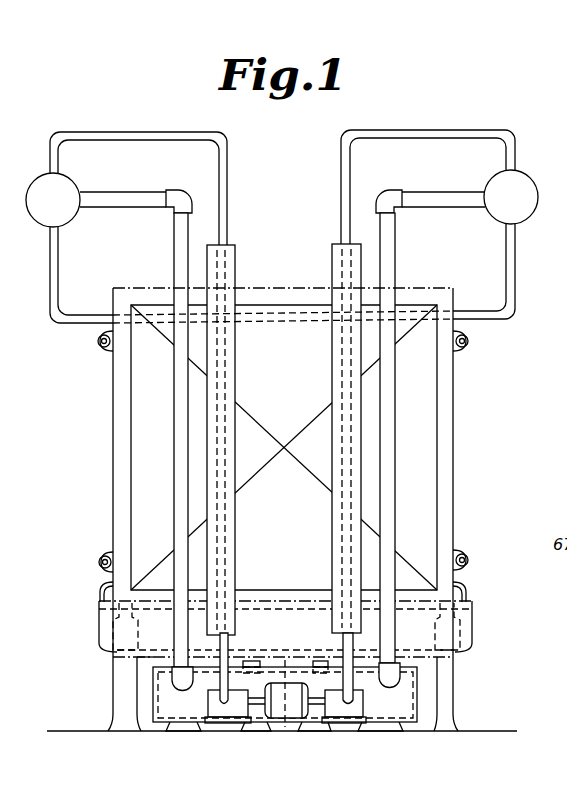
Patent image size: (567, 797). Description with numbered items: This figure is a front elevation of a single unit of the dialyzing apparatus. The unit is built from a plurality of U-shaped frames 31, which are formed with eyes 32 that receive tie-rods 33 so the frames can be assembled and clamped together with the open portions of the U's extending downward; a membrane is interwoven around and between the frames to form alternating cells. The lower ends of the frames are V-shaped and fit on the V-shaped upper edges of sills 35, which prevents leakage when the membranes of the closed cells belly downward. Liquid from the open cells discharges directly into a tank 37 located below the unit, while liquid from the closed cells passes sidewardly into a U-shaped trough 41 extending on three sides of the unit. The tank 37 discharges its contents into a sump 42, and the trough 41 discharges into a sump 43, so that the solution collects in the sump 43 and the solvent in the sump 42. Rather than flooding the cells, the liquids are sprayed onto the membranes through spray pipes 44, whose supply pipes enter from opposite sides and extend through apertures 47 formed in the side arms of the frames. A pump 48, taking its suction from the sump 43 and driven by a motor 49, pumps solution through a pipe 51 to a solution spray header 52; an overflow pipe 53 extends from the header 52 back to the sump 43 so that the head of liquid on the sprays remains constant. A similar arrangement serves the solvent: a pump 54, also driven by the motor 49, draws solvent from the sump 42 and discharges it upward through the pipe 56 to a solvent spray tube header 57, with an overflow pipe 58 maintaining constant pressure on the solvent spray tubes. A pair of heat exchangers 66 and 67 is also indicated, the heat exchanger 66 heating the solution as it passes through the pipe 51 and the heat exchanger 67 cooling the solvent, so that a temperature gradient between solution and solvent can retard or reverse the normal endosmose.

The U-shaped frame 31 is at (282, 509).
The eye 32 is at (101, 349).
The tie-rod 33 is at (466, 555).
The sill 35 is at (108, 616).
The tank 37 is at (305, 608).
The U-shaped trough 41 is at (105, 635).
The sump 42 is at (410, 700).
The sump 43 is at (168, 710).
The spray pipe 44 is at (300, 316).
The aperture 47 is at (113, 317).
The pump 48 is at (240, 708).
The motor 49 is at (297, 713).
The pipe 51 is at (223, 216).
The solution spray header 52 is at (41, 216).
The overflow pipe 53 is at (180, 378).
The pump 54 is at (362, 717).
The pipe 56 is at (350, 181).
The solvent spray tube header 57 is at (525, 188).
The overflow pipe 58 is at (395, 508).
The heat exchanger 66 is at (233, 518).
The heat exchanger 67 is at (333, 521).